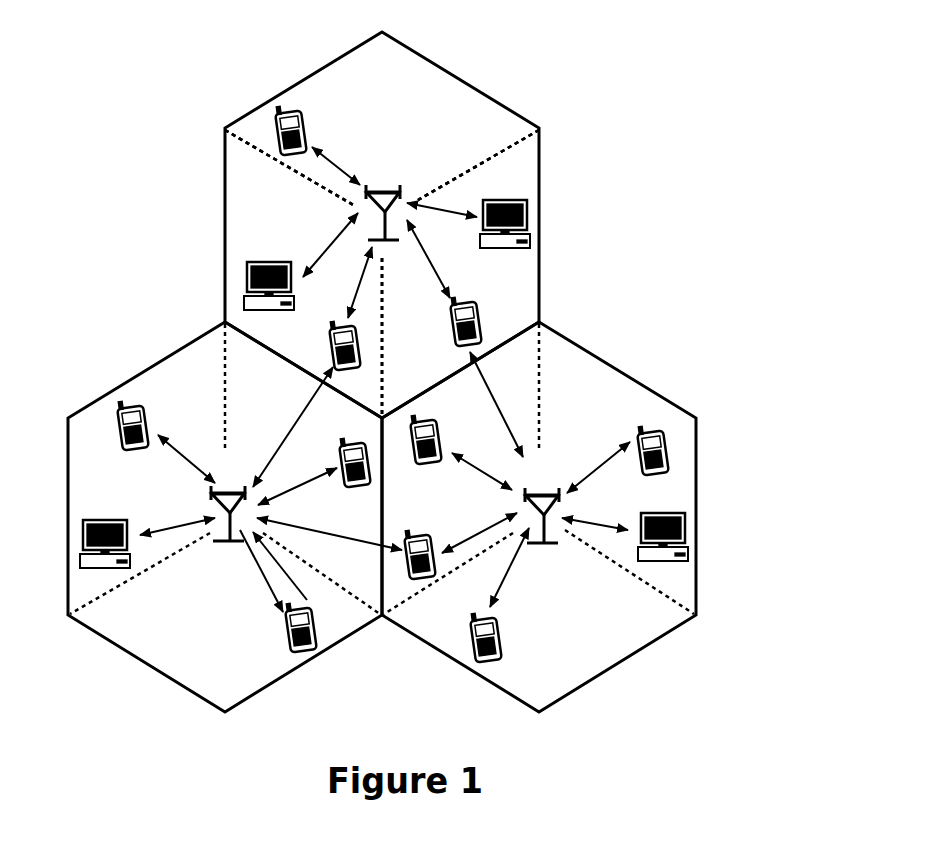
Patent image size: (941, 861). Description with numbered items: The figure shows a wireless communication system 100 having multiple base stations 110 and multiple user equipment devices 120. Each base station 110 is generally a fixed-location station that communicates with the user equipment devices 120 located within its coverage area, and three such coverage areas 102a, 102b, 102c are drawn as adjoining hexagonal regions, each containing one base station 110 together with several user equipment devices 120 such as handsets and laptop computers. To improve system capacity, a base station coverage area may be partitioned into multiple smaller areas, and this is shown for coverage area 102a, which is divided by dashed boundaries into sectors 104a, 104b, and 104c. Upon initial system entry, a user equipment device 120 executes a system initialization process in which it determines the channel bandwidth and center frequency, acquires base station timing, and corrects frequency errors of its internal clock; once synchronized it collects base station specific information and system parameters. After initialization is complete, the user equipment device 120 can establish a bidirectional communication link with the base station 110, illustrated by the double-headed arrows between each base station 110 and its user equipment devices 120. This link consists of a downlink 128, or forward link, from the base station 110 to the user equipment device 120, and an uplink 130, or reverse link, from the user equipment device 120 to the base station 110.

The wireless communication system 100 is at (808, 92).
The coverage area 102a is at (453, 78).
The coverage area 102b is at (142, 373).
The coverage area 102c is at (625, 375).
The sector 104a is at (382, 132).
The sector 104b is at (303, 273).
The sector 104c is at (460, 273).
The base station 110 is at (386, 190).
The user equipment device 120 is at (384, 382).
The downlink 128 is at (264, 590).
The uplink 130 is at (274, 556).